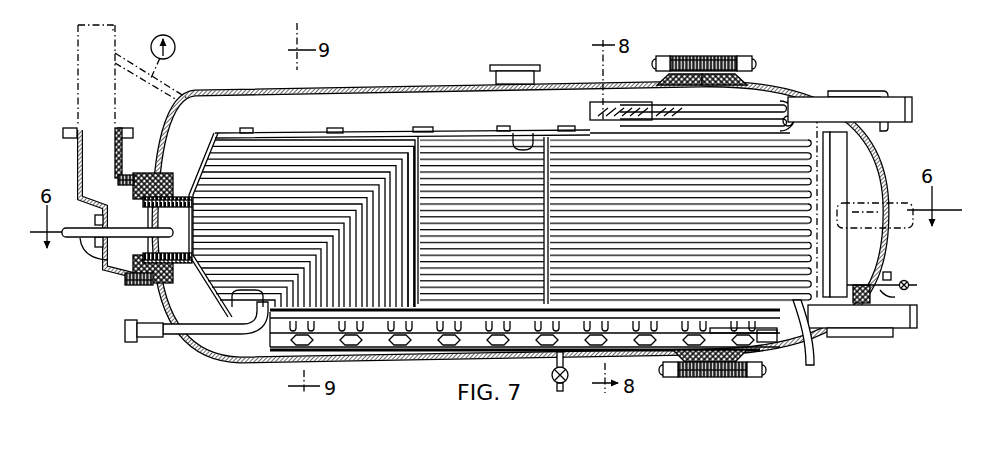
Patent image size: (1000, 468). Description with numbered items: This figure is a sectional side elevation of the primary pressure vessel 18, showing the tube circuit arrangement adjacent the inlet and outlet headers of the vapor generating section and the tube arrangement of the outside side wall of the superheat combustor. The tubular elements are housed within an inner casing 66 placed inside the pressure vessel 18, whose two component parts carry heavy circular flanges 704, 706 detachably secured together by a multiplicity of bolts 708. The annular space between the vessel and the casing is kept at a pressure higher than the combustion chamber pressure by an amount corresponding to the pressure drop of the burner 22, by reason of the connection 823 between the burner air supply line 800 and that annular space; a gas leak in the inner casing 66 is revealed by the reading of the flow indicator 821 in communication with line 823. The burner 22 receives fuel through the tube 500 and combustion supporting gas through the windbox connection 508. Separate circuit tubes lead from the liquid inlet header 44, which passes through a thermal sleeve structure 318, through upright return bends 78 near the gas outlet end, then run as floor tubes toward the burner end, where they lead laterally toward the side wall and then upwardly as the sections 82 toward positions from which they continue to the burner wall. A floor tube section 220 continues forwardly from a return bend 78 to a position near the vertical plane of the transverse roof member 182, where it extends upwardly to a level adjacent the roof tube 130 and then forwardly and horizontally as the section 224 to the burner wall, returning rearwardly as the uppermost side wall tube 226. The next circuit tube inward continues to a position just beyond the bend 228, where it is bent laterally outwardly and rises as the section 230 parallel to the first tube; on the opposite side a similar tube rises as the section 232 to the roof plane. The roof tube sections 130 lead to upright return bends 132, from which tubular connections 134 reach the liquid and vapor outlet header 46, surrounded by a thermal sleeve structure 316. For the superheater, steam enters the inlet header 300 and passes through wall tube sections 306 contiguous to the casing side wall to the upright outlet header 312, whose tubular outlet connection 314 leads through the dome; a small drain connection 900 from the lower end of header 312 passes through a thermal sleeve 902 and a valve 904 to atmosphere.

The primary pressure vessel 18 is at (357, 87).
The burner 22 is at (110, 283).
The liquid inlet header 44 is at (909, 288).
The liquid and vapor outlet header 46 is at (895, 103).
The inner casing 66 is at (293, 118).
The upright return bends 78 is at (806, 358).
The upwardly extending tube sections 82 is at (310, 280).
The longitudinally extending roof tube sections 130 is at (535, 133).
The upright return bends 132 is at (792, 118).
The tubular connections 134 is at (727, 118).
The transverse roof member 182 is at (465, 133).
The floor tube section 220 is at (450, 303).
The horizontal tube section 224 is at (353, 147).
The uppermost side wall tube 226 is at (510, 130).
The bend 228 is at (418, 303).
The upright tube section 230 is at (417, 220).
The upright tube section 232 is at (415, 170).
The superheater inlet header 300 is at (823, 162).
The wall tube sections 306 is at (790, 262).
The superheater outlet header 312 is at (847, 180).
The tubular outlet connection 314 is at (920, 227).
The thermal sleeve structure 316 is at (850, 90).
The thermal sleeve structure 318 is at (870, 330).
The fuel tube 500 is at (84, 246).
The windbox connection 508 is at (77, 157).
The circular flange 704 is at (682, 56).
The circular flange 706 is at (718, 50).
The bolts 708 is at (660, 56).
The burner air supply line 800 is at (78, 53).
The flow indicator 821 is at (175, 47).
The connection line 823 is at (151, 78).
The tubular drain connection 900 is at (858, 287).
The thermal sleeve 902 is at (888, 272).
The valve 904 is at (905, 300).